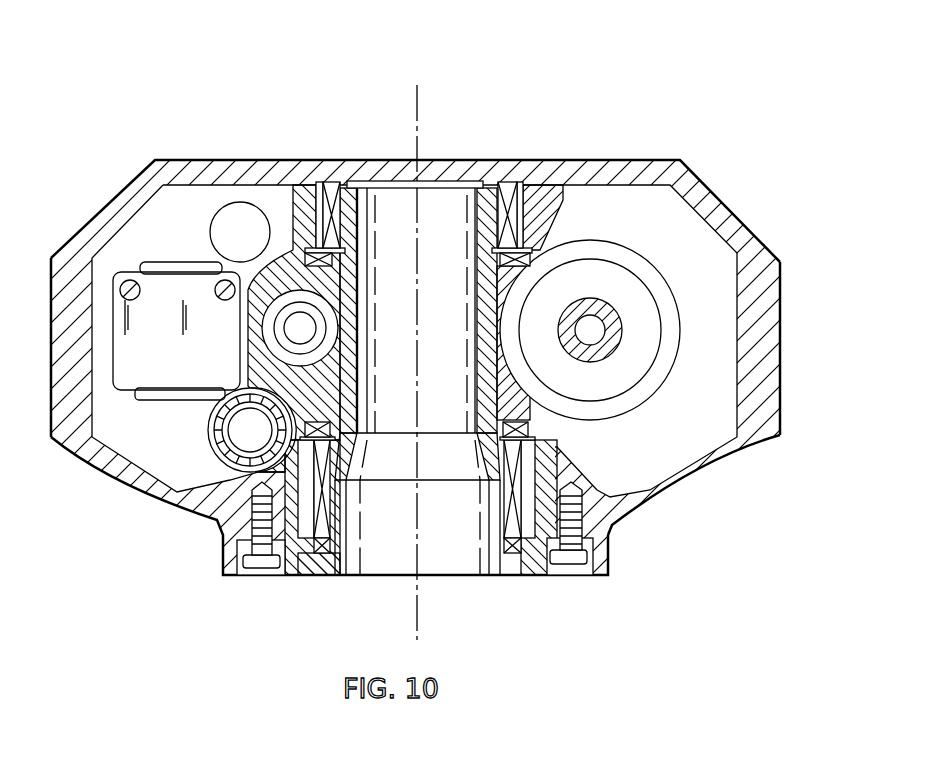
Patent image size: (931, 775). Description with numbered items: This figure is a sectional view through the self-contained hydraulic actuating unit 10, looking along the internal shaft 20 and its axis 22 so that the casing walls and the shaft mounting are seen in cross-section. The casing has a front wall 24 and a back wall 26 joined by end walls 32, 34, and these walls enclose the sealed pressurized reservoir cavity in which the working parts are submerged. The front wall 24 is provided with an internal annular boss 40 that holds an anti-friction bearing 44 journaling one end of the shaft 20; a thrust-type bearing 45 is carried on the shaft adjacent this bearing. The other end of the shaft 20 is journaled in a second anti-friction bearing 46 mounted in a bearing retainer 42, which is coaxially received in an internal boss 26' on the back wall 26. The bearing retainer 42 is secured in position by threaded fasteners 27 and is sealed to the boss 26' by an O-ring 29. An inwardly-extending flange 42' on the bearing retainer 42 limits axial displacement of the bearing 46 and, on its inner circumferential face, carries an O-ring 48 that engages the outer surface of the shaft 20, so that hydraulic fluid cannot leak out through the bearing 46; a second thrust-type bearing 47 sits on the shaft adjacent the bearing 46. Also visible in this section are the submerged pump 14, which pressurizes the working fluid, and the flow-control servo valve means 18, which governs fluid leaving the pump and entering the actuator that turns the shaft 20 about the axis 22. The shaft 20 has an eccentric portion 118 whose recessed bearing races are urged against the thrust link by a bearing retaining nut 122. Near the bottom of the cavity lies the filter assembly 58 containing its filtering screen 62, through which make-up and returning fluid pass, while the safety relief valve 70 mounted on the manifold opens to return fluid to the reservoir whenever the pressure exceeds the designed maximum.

The hydraulic actuating unit 10 is at (697, 161).
The pump 14 is at (590, 306).
The flow-control servo valve means 18 is at (162, 332).
The shaft 20 is at (450, 297).
The axis 22 is at (418, 103).
The front wall 24 is at (552, 174).
The back wall 26 is at (694, 486).
The internal boss 26' is at (566, 507).
The threaded fasteners 27 is at (243, 573).
The O-ring 29 is at (542, 553).
The end wall 32 is at (775, 377).
The end wall 34 is at (53, 388).
The internal annular boss 40 is at (547, 214).
The bearing retainer 42 is at (305, 521).
The inwardly-extending flange 42' is at (319, 577).
The anti-friction bearing 44 is at (504, 186).
The thrust-type bearing 45 is at (528, 260).
The anti-friction bearing 46 is at (507, 497).
The thrust-type bearing 47 is at (530, 426).
The O-ring 48 is at (505, 552).
The filter assembly 58 is at (232, 456).
The screen 62 is at (267, 440).
The safety relief valve 70 is at (212, 218).
The eccentric portion 118 is at (265, 345).
The bearing retaining nut 122 is at (262, 323).